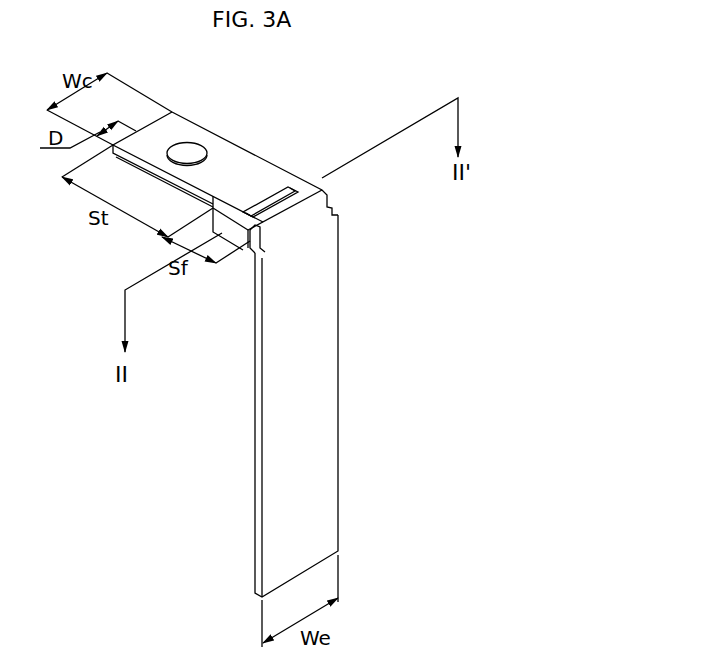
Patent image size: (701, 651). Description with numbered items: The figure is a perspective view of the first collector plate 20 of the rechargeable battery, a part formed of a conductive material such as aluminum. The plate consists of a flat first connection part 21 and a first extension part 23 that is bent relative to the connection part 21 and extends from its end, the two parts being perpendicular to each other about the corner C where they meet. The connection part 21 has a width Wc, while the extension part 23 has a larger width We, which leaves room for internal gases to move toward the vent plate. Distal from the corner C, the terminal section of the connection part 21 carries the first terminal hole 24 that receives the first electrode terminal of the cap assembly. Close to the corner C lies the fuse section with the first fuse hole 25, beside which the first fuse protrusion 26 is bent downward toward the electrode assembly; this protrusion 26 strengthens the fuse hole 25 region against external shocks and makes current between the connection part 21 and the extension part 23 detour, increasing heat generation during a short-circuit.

The first collector plate 20 is at (274, 324).
The first connection part 21 is at (228, 156).
The first extension part 23 is at (323, 330).
The first terminal hole 24 is at (188, 146).
The first fuse hole 25 is at (283, 185).
The first fuse protrusion 26 is at (255, 258).
The corner C is at (292, 214).